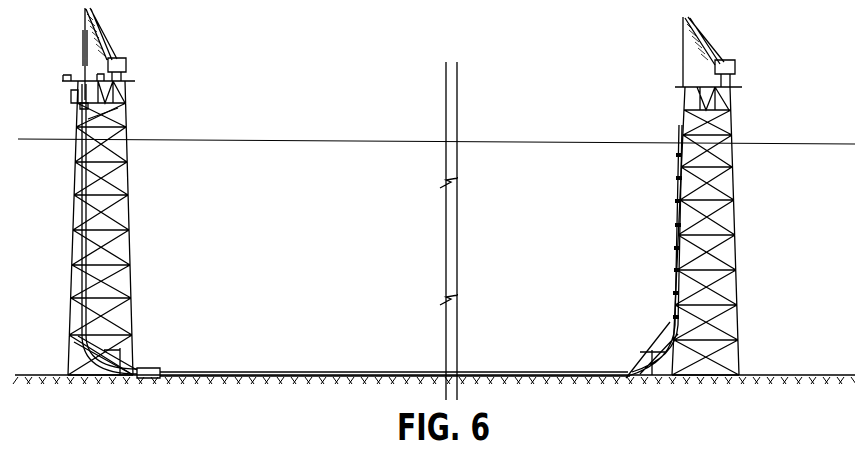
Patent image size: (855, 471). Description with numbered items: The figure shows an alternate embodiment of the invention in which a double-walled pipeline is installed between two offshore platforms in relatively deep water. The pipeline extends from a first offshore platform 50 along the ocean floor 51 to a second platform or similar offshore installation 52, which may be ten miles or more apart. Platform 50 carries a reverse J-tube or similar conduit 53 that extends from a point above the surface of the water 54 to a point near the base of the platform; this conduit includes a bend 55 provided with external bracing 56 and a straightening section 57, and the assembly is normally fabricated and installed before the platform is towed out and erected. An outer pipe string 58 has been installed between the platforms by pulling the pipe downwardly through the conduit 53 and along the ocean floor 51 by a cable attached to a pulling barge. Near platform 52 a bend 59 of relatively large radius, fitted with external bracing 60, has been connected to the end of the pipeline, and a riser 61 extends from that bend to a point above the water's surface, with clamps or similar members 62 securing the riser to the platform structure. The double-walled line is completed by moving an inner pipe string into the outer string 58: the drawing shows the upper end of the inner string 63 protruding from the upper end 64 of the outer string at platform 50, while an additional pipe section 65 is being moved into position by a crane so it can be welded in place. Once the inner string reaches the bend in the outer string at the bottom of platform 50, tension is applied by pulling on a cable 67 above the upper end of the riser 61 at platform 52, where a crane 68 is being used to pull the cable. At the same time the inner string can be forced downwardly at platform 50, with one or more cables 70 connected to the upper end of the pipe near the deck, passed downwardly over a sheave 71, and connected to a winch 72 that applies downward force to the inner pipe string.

The offshore platform 50 is at (130, 255).
The ocean floor 51 is at (650, 378).
The second platform 52 is at (735, 218).
The reverse J-tube conduit 53 is at (76, 249).
The surface of the water 54 is at (279, 143).
The bend 55 is at (88, 360).
The external bracing 56 is at (125, 356).
The straightening section 57 is at (160, 371).
The outer pipe string 58 is at (336, 372).
The bend 59 is at (650, 370).
The external bracing 60 is at (662, 340).
The riser 61 is at (676, 215).
The clamps 62 is at (672, 270).
The inner string 63 is at (80, 105).
The upper end of outer string 64 is at (118, 108).
The additional pipe section 65 is at (82, 32).
The cable 67 is at (683, 60).
The crane 68 is at (737, 68).
The cables 70 is at (62, 80).
The sheave 71 is at (71, 99).
The winch 72 is at (71, 73).